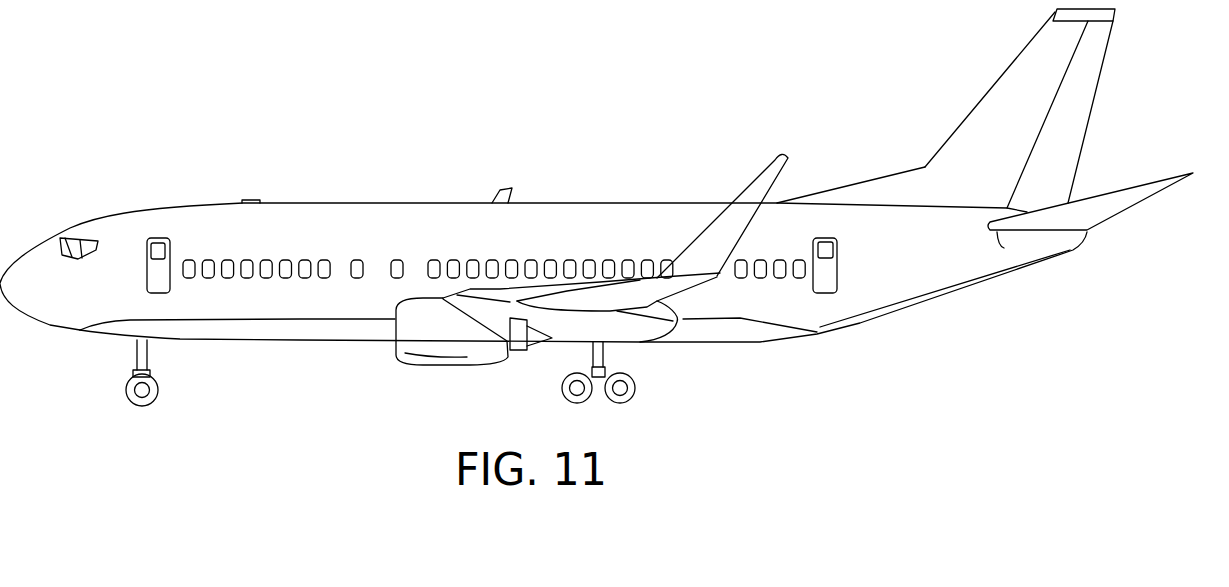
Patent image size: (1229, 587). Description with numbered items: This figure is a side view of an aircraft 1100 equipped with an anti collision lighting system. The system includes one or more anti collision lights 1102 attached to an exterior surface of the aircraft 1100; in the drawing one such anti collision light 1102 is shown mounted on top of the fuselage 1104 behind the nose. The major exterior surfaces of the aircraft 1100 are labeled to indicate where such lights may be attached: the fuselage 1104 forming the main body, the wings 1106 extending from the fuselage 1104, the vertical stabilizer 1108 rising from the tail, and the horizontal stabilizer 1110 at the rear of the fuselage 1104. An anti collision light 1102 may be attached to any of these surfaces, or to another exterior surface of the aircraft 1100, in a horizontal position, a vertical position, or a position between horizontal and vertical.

The aircraft 1100 is at (360, 92).
The anti collision light 1102 is at (251, 202).
The fuselage 1104 is at (407, 212).
The wings 1106 is at (643, 273).
The vertical stabilizer 1108 is at (1088, 85).
The horizontal stabilizer 1110 is at (1130, 182).